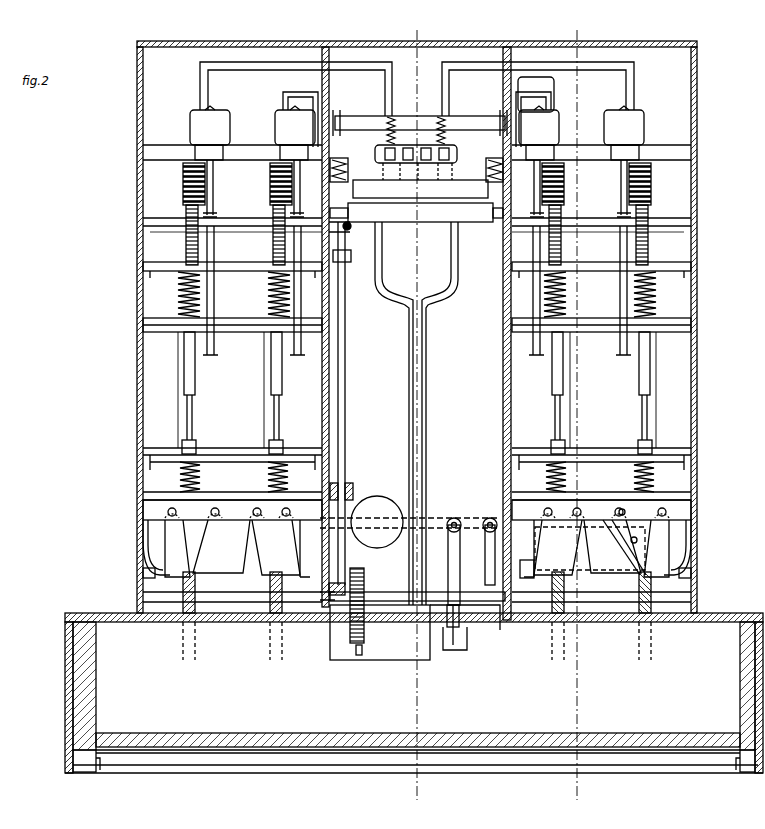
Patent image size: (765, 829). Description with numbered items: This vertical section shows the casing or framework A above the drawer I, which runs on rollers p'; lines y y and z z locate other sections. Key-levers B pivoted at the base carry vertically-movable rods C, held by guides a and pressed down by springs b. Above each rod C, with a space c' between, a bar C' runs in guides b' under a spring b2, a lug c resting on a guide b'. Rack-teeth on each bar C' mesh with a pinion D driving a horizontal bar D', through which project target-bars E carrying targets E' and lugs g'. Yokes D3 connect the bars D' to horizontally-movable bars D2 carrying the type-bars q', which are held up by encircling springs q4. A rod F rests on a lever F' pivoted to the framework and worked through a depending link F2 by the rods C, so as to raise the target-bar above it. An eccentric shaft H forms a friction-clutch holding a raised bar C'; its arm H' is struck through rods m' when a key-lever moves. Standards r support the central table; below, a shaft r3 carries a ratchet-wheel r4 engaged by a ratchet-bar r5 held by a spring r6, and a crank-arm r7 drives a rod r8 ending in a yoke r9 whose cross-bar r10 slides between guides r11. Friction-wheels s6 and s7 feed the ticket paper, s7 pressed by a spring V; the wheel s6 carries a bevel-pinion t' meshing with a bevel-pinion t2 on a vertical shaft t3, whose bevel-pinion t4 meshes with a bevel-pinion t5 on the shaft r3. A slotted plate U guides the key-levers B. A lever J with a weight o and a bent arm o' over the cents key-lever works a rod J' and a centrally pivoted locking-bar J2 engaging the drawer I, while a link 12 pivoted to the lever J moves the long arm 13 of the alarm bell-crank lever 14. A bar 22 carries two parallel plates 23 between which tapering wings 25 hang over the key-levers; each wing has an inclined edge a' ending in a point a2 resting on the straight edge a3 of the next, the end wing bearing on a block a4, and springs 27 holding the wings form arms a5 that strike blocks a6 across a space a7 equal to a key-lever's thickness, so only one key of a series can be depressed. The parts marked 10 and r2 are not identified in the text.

The horizontal bar D' is at (402, 118).
The pinion D is at (418, 157).
The horizontally-movable bar D2 is at (457, 153).
The yoke D3 is at (268, 92).
The target-bar E is at (417, 188).
The target E' is at (477, 117).
The guide a is at (417, 450).
The inclined edge a' is at (417, 547).
The point a2 is at (238, 160).
The straight edge a3 is at (394, 531).
The block a4 is at (390, 558).
The arm a5 is at (143, 572).
The block a6 is at (150, 575).
The space a7 is at (143, 594).
The spring b is at (417, 476).
The guide b' is at (427, 281).
The spring b2 is at (178, 295).
The lug c is at (417, 312).
The space c' is at (438, 415).
The vertically-movable rod C is at (417, 442).
The vertically-movable bar C' is at (417, 363).
The rod F is at (417, 417).
The lever F' is at (417, 298).
The depending link F2 is at (283, 408).
The rack g' is at (417, 250).
The eccentric shaft H is at (420, 232).
The arm H' is at (417, 241).
The rod m' is at (423, 390).
The key-lever B is at (196, 597).
The drawer I is at (414, 693).
The roller p' is at (414, 773).
The pivot 10 is at (631, 511).
The link 12 is at (590, 548).
The long arm 13 is at (715, 528).
The bell-crank lever 14 is at (627, 547).
The bar 22 is at (222, 498).
The parallel plate 23 is at (417, 529).
The wing 25 is at (378, 547).
The spring 27 is at (143, 556).
The casing A is at (715, 489).
The lever J is at (410, 516).
The rod J' is at (462, 561).
The locking-bar J2 is at (460, 634).
The weight o is at (377, 522).
The arm o' is at (532, 585).
The type-bar q' is at (417, 181).
The spring q4 is at (390, 115).
The standard r is at (329, 428).
The gear r2 is at (358, 568).
The shaft r3 is at (378, 592).
The ratchet-wheel r4 is at (341, 641).
The ratchet-bar r5 is at (358, 638).
The spring r6 is at (364, 641).
The crank-arm r7 is at (447, 640).
The rod r8 is at (428, 466).
The yoke r9 is at (420, 270).
The cross-bar r10 is at (472, 130).
The guide r11 is at (464, 103).
The friction-wheel s6 is at (416, 212).
The friction-wheel s7 is at (420, 189).
The bevel-pinion t' is at (348, 234).
The bevel-pinion t2 is at (350, 254).
The vertical shaft t3 is at (346, 313).
The bevel-pinion t4 is at (328, 541).
The bevel-pinion t5 is at (336, 603).
The plate U is at (344, 170).
The spring V is at (488, 170).
The section line y is at (415, 412).
The section line z is at (575, 411).